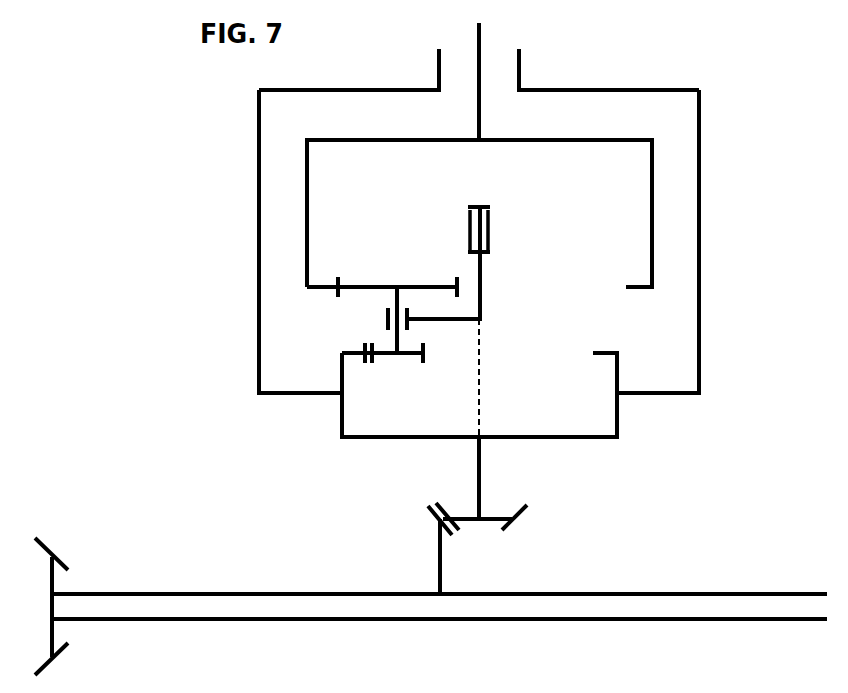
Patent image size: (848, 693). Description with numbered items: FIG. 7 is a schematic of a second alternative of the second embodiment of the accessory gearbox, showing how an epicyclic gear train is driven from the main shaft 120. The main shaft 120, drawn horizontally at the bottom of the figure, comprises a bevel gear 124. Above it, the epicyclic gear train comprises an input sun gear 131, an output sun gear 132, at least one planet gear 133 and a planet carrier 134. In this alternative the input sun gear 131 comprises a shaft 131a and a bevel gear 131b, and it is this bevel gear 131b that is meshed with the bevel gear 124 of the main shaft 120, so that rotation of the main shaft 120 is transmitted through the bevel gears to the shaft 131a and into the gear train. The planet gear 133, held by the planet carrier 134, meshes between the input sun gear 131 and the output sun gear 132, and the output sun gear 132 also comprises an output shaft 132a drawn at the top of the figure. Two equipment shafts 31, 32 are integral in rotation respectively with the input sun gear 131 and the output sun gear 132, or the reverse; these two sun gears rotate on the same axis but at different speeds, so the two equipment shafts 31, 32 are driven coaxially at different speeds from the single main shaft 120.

The equipment shaft 31 is at (519, 70).
The equipment shaft 32 is at (479, 95).
The main shaft 120 is at (239, 594).
The bevel gear 124 is at (438, 566).
The input sun gear 131 is at (546, 488).
The shaft 131a is at (481, 490).
The bevel gear 131b is at (526, 512).
The output sun gear 132 is at (652, 212).
The output shaft 132a is at (479, 125).
The planet gear 133 is at (368, 287).
The planet carrier 134 is at (482, 290).